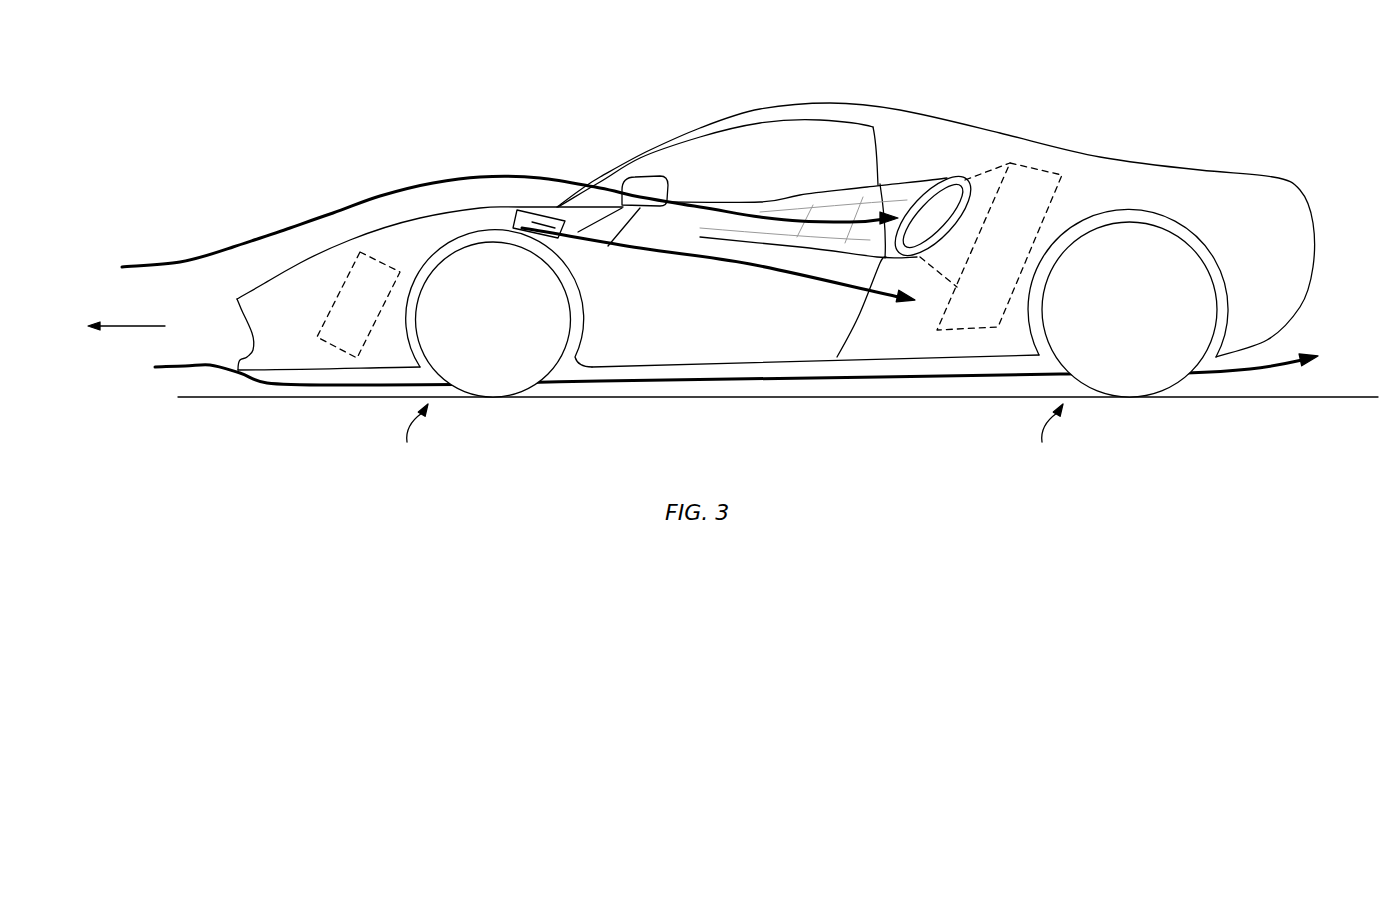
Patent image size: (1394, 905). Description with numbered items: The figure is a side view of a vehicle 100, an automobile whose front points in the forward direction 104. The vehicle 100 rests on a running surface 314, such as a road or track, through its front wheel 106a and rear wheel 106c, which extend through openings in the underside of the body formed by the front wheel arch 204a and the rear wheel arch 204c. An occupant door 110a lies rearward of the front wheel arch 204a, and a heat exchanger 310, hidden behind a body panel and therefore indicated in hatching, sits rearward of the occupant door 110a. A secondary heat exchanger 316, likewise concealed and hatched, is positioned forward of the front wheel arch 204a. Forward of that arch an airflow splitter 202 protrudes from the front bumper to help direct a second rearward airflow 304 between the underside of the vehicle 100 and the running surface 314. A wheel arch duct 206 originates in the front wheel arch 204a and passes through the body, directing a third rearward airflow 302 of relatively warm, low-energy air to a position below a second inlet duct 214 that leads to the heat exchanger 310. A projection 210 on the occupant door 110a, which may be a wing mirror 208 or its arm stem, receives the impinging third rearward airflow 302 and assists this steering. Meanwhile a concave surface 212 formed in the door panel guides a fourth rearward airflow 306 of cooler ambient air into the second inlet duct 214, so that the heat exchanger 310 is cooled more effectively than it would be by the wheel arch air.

The vehicle 100 is at (205, 122).
The forward direction 104 is at (125, 328).
The front wheel 106a is at (493, 398).
The rear wheel 106c is at (1130, 398).
The occupant door 110a is at (726, 343).
The airflow splitter 202 is at (237, 372).
The front wheel arch 204a is at (391, 437).
The rear wheel arch 204c is at (1026, 437).
The wheel arch duct 206 is at (527, 240).
The wing mirror 208 is at (647, 180).
The projection 210 is at (617, 213).
The concave surface 212 is at (838, 207).
The second inlet duct 214 is at (932, 180).
The third rearward airflow 302 is at (700, 262).
The second rearward airflow 304 is at (1250, 375).
The fourth rearward airflow 306 is at (463, 175).
The heat exchanger 310 is at (1040, 168).
The running surface 314 is at (1350, 398).
The secondary heat exchanger 316 is at (360, 252).